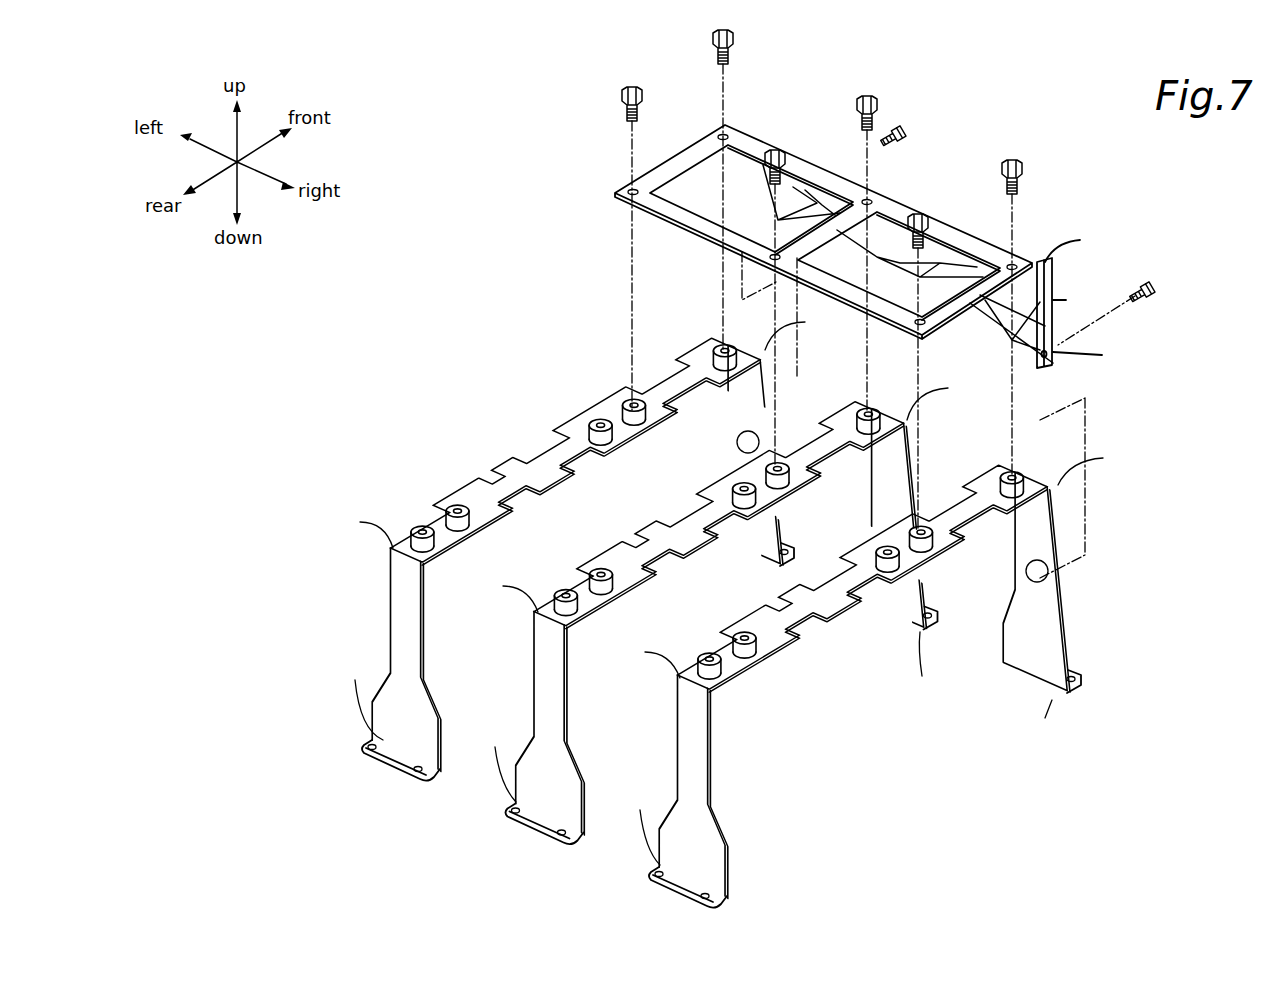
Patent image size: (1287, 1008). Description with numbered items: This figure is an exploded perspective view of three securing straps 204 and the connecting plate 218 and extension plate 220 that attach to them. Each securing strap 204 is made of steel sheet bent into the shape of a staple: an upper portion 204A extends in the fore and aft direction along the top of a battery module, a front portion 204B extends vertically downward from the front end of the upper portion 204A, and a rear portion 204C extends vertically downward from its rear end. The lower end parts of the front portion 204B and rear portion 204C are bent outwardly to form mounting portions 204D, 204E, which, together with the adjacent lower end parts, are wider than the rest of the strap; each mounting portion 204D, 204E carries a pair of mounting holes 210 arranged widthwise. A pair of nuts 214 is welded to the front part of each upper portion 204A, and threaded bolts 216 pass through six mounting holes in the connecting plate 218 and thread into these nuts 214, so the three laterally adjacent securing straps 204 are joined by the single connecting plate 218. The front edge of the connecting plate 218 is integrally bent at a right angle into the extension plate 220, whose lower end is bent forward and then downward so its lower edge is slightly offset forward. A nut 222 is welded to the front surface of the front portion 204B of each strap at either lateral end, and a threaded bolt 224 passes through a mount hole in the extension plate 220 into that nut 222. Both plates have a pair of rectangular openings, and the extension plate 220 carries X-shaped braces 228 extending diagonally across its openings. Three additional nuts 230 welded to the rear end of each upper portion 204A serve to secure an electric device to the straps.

The securing strap 204 is at (725, 584).
The upper portion 204A is at (483, 482).
The front portion 204B is at (740, 372).
The rear portion 204C is at (390, 600).
The mounting portion 204D is at (932, 622).
The mounting portion 204E is at (392, 757).
The mounting holes 210 is at (368, 744).
The nuts 214 is at (633, 404).
The threaded bolts 216 is at (735, 38).
The connecting plate 218 is at (888, 228).
The extension plate 220 is at (1052, 322).
The nut 222 is at (737, 447).
The threaded bolt 224 is at (895, 125).
The X-shaped braces 228 is at (818, 202).
The nuts 230 is at (453, 512).